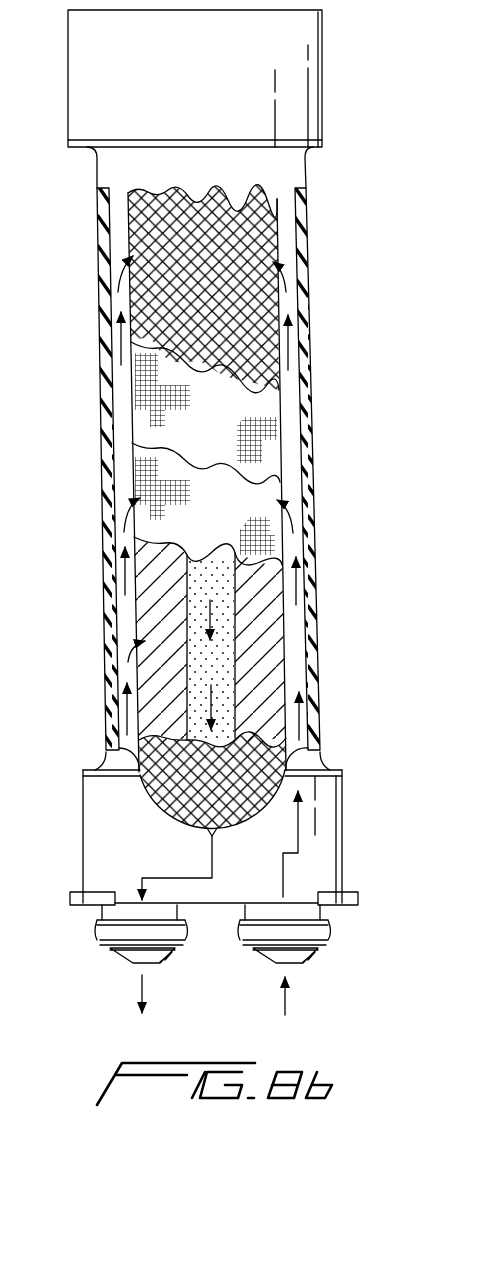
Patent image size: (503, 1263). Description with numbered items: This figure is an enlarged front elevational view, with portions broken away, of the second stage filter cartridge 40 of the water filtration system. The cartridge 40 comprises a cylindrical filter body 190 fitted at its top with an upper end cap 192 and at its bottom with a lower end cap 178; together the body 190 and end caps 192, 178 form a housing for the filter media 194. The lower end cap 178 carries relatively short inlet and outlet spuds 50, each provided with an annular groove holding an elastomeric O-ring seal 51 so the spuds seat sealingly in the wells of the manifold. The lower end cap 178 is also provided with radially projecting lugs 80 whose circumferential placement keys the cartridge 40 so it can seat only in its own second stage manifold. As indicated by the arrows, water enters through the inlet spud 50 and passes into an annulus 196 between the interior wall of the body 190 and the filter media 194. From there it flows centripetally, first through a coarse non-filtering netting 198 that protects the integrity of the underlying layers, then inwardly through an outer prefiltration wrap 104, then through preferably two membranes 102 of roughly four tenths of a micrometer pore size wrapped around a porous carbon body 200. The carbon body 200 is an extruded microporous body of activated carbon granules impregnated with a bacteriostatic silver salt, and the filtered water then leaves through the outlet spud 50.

The second stage filter cartridge 40 is at (78, 228).
The upper end cap 192 is at (95, 80).
The cylindrical filter body 190 is at (110, 592).
The coarse non-filtering netting 198 is at (145, 285).
The filter media 194 is at (130, 675).
The annulus 196 is at (295, 500).
The outer prefiltration wrap 104 is at (148, 422).
The membranes 102 is at (150, 528).
The porous carbon body 200 is at (158, 633).
The lower end cap 178 is at (97, 835).
The radially projecting lugs 80 is at (70, 900).
The O-ring seal 51 is at (95, 937).
The inlet and outlet spuds 50 is at (248, 967).